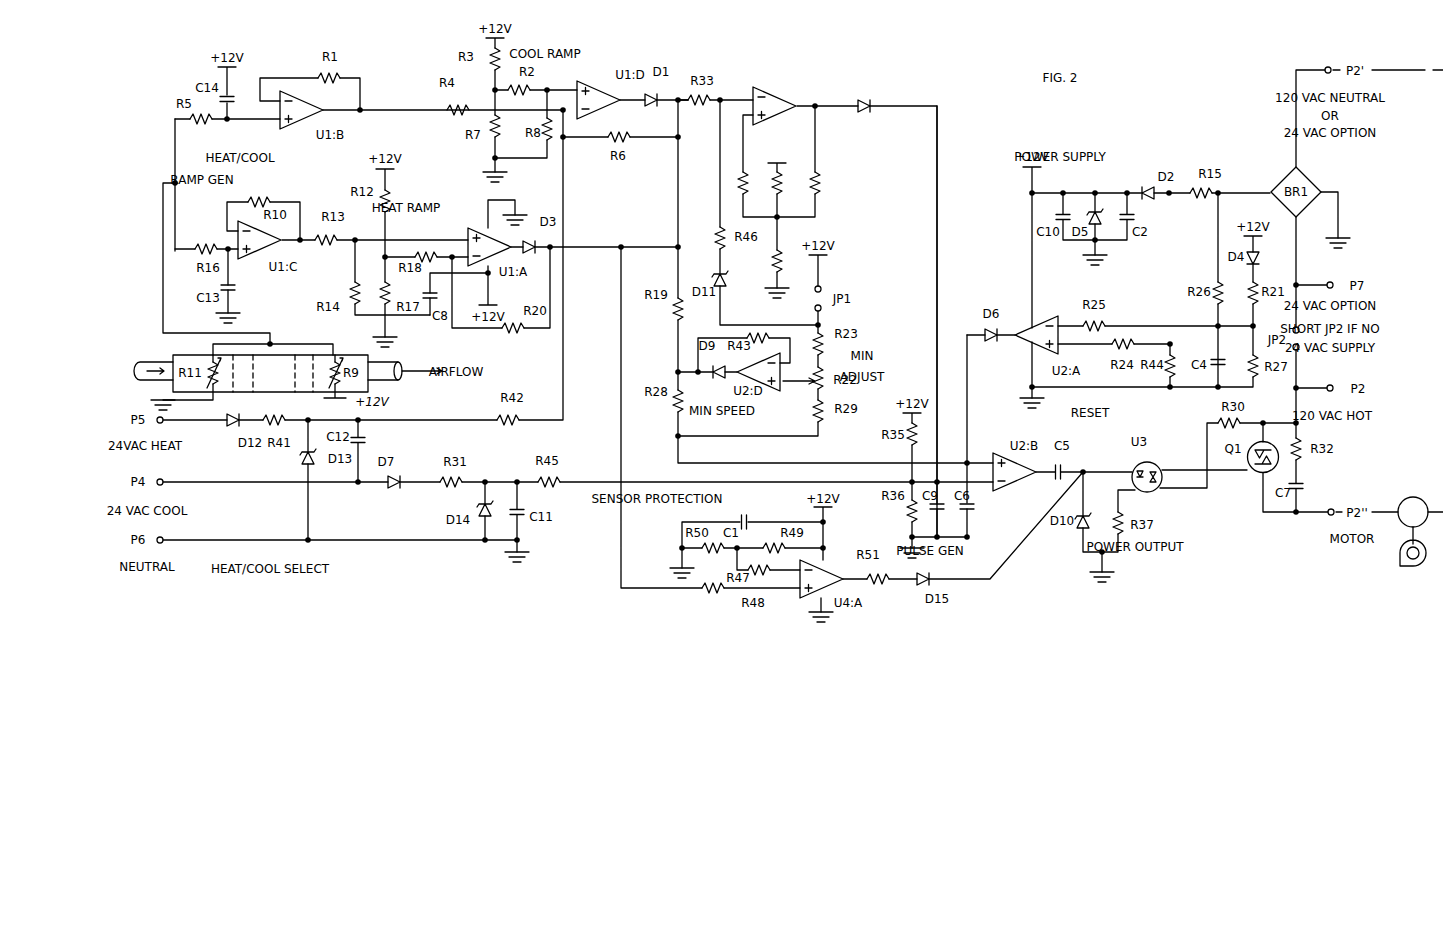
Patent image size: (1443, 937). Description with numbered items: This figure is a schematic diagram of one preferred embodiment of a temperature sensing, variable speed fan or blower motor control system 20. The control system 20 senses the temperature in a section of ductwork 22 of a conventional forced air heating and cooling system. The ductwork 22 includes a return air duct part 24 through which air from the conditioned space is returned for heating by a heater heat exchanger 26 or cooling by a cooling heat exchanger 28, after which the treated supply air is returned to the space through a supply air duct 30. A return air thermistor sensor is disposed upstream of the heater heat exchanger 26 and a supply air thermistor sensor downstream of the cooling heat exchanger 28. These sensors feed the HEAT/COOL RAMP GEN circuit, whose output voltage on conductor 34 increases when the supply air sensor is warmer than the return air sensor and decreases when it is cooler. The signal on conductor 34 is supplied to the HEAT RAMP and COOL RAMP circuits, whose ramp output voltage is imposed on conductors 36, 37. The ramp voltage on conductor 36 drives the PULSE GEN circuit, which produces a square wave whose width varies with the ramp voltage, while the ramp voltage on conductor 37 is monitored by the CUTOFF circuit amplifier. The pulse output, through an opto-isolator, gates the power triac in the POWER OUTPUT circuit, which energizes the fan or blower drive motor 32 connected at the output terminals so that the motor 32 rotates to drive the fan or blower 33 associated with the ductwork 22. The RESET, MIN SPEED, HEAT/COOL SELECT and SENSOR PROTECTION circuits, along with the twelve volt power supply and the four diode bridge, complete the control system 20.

The control system 20 is at (849, 72).
The ductwork 22 is at (285, 393).
The return air duct part 24 is at (134, 367).
The heater heat exchanger 26 is at (239, 393).
The cooling heat exchanger 28 is at (299, 354).
The supply air duct 30 is at (396, 361).
The fan or blower drive motor 32 is at (1414, 497).
The fan or blower 33 is at (1398, 554).
The conductor 34 is at (174, 181).
The conductor 36 is at (676, 216).
The conductor 37 is at (678, 95).